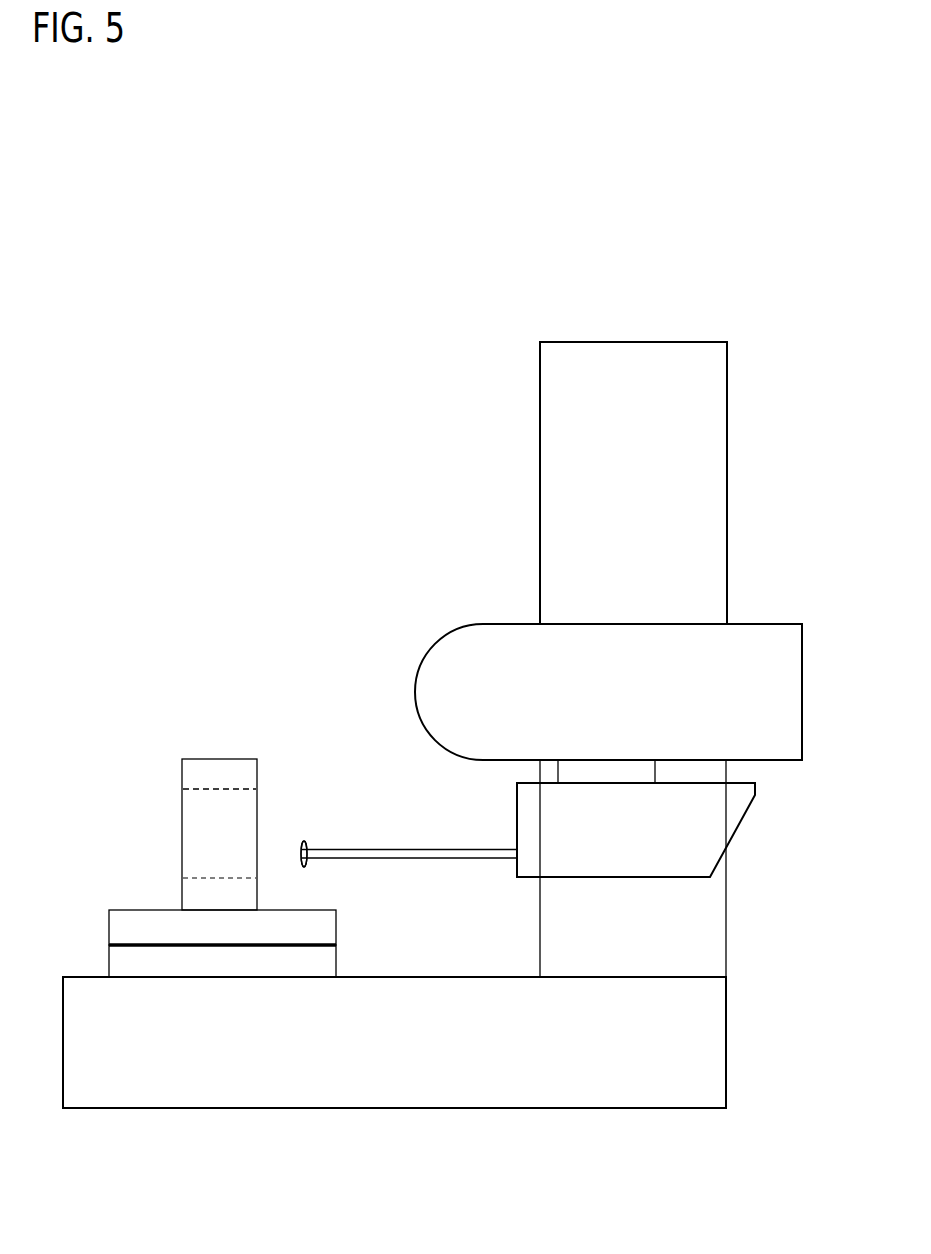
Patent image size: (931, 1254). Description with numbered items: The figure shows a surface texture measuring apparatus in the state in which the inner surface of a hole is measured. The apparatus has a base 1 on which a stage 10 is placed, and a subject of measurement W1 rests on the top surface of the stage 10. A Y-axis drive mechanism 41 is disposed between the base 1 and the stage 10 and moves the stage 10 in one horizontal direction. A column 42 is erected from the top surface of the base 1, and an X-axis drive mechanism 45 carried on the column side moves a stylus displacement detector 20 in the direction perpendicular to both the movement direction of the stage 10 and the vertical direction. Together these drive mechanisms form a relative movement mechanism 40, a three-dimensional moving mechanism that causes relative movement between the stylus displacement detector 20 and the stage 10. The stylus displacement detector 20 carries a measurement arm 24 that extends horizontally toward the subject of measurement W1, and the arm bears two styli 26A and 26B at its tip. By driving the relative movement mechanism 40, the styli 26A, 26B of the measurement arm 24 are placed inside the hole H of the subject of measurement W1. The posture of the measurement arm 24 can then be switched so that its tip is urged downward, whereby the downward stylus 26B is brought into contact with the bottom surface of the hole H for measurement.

The base 1 is at (443, 1101).
The stage 10 is at (132, 908).
The stylus displacement detector 20 is at (725, 813).
The measurement arm 24 is at (456, 862).
The stylus 26A is at (305, 841).
The downward stylus 26B is at (307, 868).
The relative movement mechanism 40 is at (333, 490).
The Y-axis drive mechanism 41 is at (290, 975).
The column 42 is at (722, 418).
The X-axis drive mechanism 45 is at (777, 623).
The subject of measurement W1 is at (228, 758).
The hole H is at (204, 790).